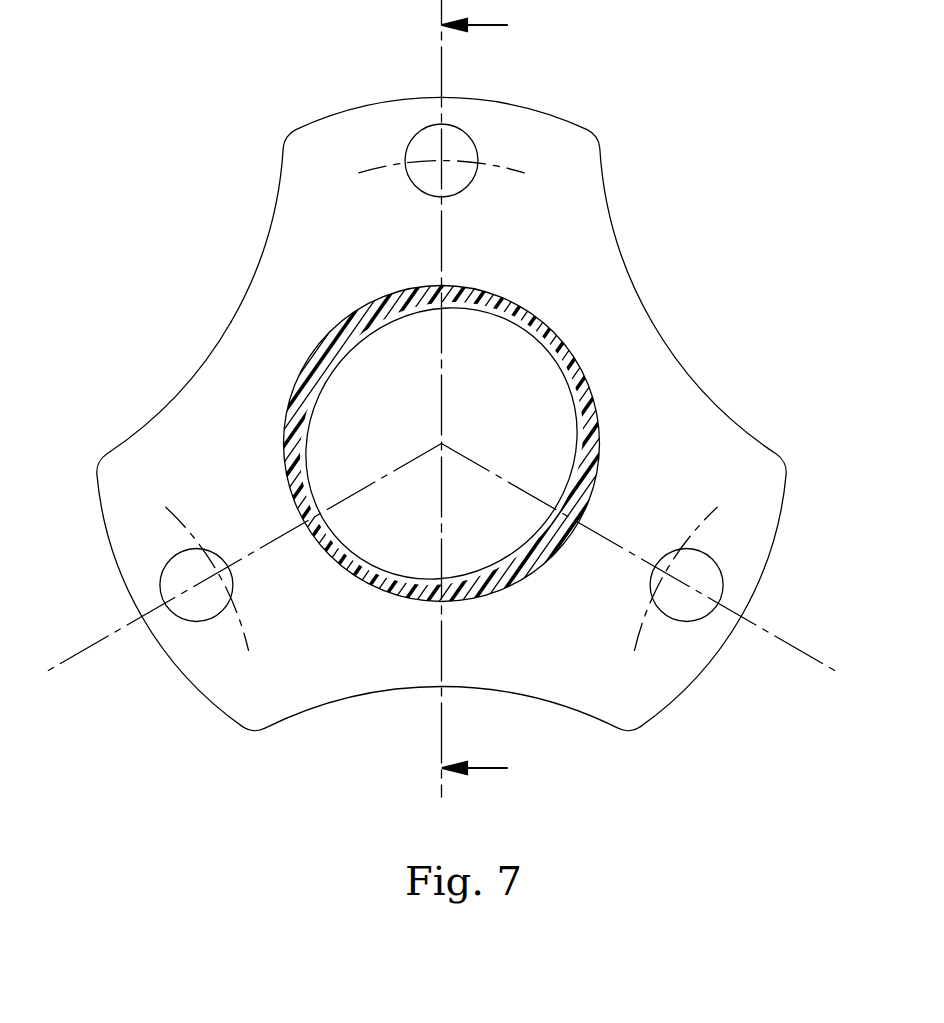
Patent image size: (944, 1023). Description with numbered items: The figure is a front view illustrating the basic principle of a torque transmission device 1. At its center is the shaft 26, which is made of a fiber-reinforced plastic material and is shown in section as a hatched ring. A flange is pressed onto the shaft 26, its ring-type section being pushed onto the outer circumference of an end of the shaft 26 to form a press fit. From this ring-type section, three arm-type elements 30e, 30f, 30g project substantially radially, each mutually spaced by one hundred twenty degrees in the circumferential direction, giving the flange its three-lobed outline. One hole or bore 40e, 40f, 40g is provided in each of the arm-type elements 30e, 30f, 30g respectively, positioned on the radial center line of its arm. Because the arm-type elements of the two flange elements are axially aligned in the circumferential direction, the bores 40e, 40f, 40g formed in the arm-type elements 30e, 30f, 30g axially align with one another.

The torque transmission device 1 is at (451, 398).
The shaft 26 is at (533, 327).
The arm-type element 30e is at (547, 155).
The arm-type element 30f is at (758, 502).
The arm-type element 30g is at (227, 683).
The bore 40e is at (458, 133).
The bore 40f is at (712, 568).
The bore 40g is at (166, 572).